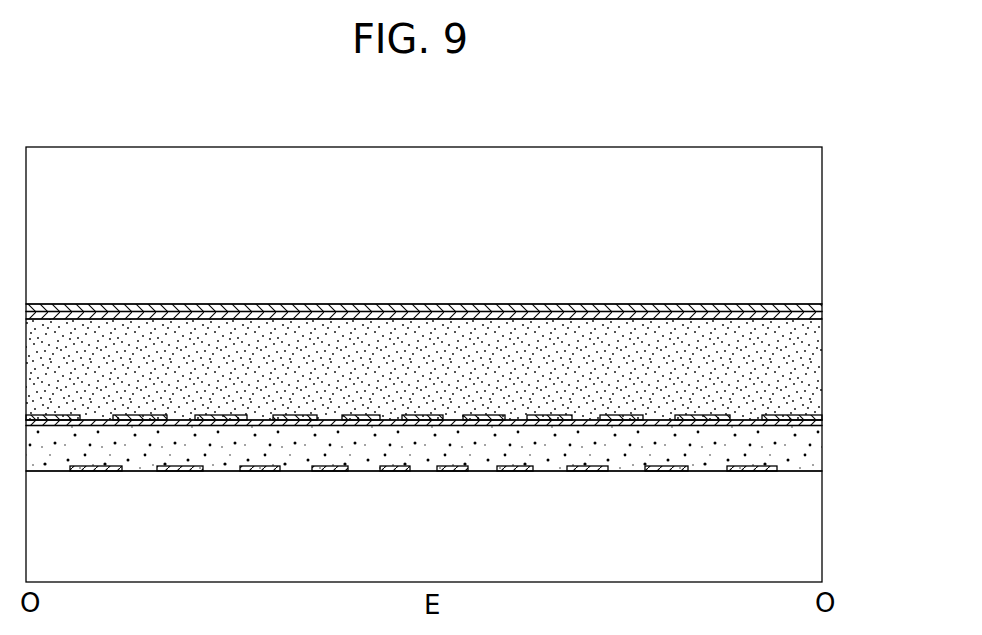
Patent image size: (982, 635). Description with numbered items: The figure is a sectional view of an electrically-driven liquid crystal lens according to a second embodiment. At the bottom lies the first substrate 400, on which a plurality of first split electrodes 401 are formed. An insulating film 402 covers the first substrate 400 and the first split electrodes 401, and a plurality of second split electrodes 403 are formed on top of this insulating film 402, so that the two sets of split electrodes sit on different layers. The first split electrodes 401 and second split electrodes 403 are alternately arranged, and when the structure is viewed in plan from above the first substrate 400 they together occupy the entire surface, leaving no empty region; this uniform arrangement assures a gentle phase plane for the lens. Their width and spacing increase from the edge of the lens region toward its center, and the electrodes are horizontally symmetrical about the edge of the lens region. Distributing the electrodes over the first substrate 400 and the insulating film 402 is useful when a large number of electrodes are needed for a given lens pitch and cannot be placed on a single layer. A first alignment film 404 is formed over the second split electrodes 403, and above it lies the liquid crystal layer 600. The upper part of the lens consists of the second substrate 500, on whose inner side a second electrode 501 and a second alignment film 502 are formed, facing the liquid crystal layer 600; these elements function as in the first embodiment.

The second substrate 500 is at (810, 186).
The second electrode 501 is at (816, 306).
The second alignment film 502 is at (816, 320).
The liquid crystal layer 600 is at (810, 372).
The first alignment film 404 is at (816, 418).
The second split electrodes 403 is at (816, 425).
The insulating film 402 is at (813, 455).
The first split electrodes 401 is at (773, 472).
The first substrate 400 is at (810, 554).